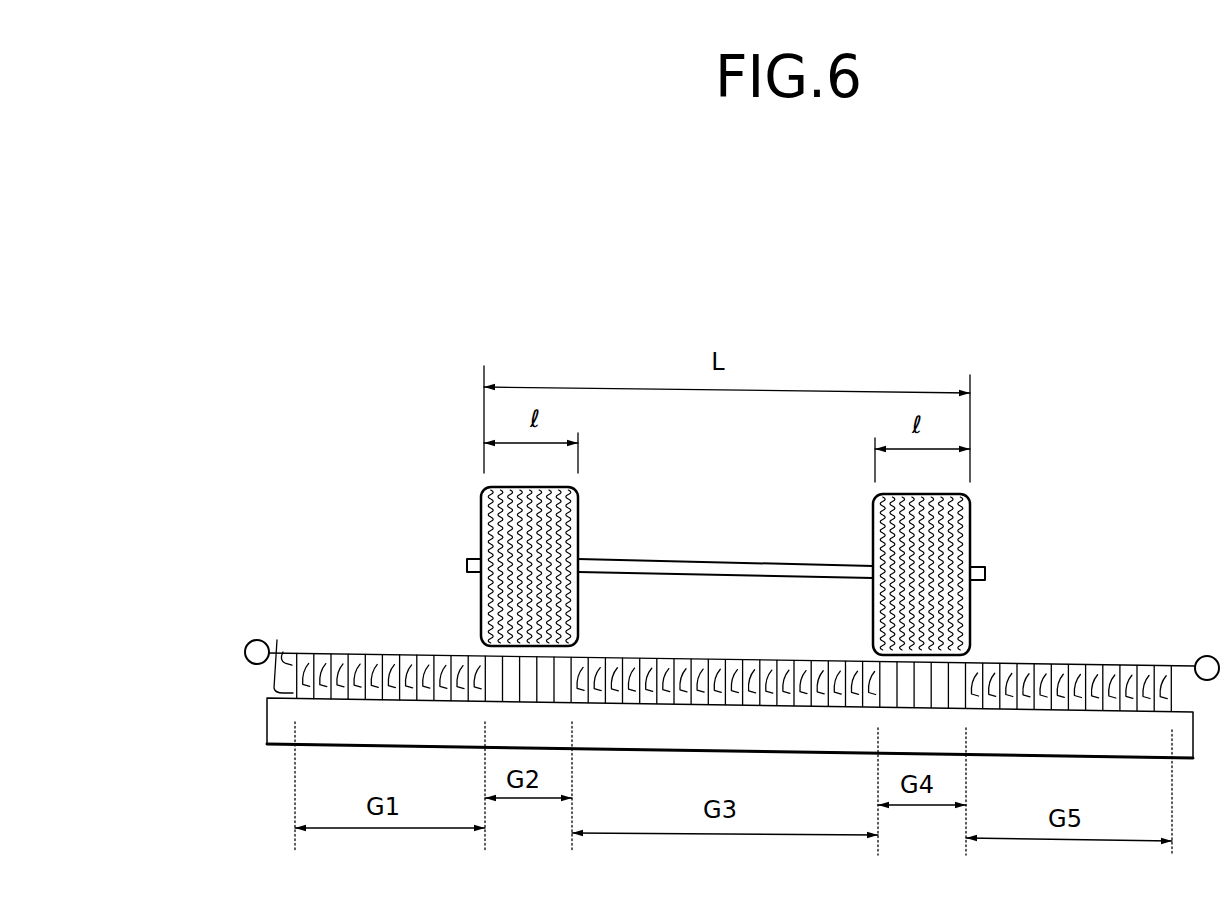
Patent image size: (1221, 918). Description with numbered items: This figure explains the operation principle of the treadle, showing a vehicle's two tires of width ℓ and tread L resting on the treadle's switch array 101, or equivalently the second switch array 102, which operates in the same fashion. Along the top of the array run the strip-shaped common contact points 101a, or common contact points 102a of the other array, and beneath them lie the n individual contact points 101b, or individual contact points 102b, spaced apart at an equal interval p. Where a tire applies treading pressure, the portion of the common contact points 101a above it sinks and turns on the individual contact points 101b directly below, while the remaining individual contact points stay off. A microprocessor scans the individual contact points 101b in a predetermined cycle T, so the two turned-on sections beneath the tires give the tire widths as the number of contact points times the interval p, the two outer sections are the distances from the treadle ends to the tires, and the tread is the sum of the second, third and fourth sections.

The switch array 101 is at (210, 592).
The switch array 102 is at (675, 630).
The common contact points 101a is at (283, 652).
The individual contact points 101b is at (277, 640).
The common contact points 102a is at (262, 583).
The individual contact points 102b is at (253, 627).